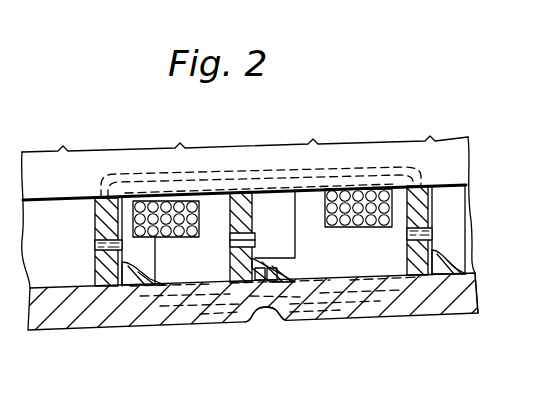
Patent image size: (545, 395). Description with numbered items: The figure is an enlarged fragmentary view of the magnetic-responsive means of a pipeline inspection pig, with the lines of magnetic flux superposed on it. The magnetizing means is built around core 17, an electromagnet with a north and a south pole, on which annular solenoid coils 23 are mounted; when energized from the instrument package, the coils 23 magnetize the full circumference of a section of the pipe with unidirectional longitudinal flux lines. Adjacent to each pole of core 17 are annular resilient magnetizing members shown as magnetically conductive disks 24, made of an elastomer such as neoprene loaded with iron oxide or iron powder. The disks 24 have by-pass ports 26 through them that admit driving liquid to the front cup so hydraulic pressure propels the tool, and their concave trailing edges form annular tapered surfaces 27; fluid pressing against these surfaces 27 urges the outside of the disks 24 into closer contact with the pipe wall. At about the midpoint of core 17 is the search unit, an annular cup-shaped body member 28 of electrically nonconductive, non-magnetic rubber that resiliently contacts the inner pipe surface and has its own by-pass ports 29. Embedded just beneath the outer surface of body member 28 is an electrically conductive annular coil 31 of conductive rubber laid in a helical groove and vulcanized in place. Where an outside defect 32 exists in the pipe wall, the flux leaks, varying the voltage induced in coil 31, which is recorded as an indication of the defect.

The core 17 is at (346, 142).
The solenoid coils 23 is at (168, 238).
The magnetically conductive disks 24 is at (95, 226).
The by-pass ports 26 is at (95, 249).
The annular tapered surfaces 27 is at (150, 267).
The annular body member 28 is at (237, 214).
The by-pass ports 29 is at (258, 243).
The electrically conductive annular coil 31 is at (298, 273).
The outside defect 32 is at (268, 325).